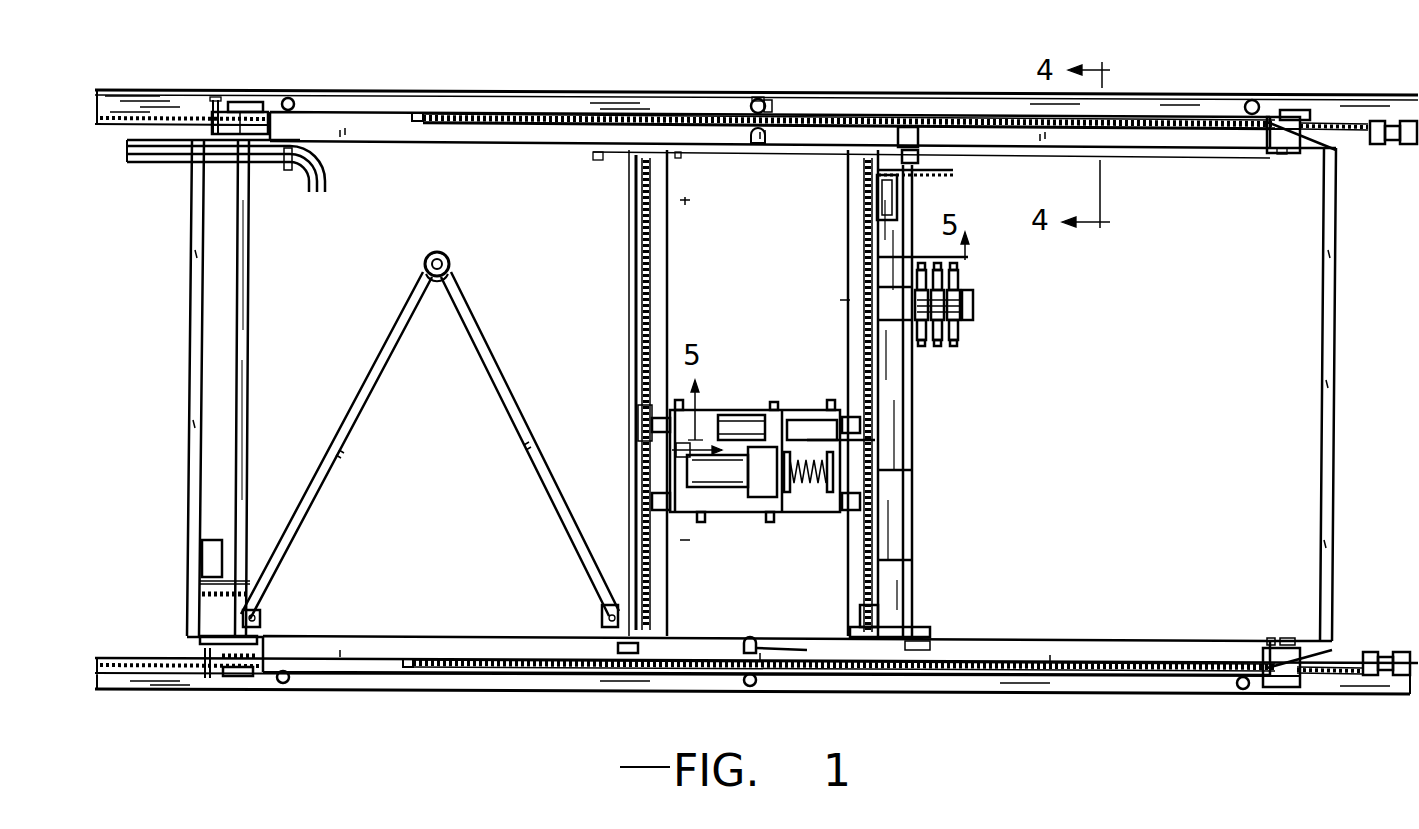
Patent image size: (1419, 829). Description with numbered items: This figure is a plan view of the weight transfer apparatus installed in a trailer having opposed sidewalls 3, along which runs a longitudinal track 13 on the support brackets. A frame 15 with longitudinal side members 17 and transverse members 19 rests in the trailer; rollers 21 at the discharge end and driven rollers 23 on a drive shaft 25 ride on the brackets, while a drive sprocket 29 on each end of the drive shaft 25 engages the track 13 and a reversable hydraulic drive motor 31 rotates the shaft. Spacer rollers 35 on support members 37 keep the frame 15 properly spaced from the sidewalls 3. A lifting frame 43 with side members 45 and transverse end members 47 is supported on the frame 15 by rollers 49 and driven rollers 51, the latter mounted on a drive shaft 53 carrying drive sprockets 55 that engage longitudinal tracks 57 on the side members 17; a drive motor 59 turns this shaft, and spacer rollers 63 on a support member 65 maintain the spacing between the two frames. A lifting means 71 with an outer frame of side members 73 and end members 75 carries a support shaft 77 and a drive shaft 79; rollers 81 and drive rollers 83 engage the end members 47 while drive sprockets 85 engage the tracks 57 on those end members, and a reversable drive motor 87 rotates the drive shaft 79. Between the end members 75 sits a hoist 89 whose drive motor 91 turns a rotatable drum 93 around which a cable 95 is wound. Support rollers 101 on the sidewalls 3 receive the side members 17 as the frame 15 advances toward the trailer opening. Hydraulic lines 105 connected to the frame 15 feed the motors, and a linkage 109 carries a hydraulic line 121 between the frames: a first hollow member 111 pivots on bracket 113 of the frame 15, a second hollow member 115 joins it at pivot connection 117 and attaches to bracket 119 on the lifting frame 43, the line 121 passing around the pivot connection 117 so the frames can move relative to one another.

The sidewalls 3 is at (1197, 92).
The longitudinal track 13 is at (160, 92).
The frame 15 is at (767, 391).
The longitudinal side members 17 is at (347, 123).
The transverse members 19 is at (190, 354).
The rollers 21 is at (1295, 112).
The driven rollers 23 is at (247, 102).
The drive shaft 25 is at (250, 273).
The drive sprocket 29 is at (224, 104).
The reversable hydraulic drive motor 31 is at (200, 559).
The spacer rollers 35 is at (760, 100).
The support members 37 is at (772, 108).
The lifting frame 43 is at (922, 397).
The side members 45 is at (717, 147).
The transverse end members 47 is at (862, 600).
The rollers 49 is at (622, 650).
The driven rollers 51 is at (930, 647).
The drive shaft 53 is at (914, 476).
The drive sprockets 55 is at (905, 125).
The longitudinal tracks 57 is at (517, 117).
The drive motor 59 is at (857, 191).
The spacer rollers 63 is at (747, 647).
The support member 65 is at (760, 647).
The lifting means 71 is at (747, 449).
The side members 73 is at (773, 410).
The end members 75 is at (845, 416).
The support shaft 77 is at (730, 508).
The drive shaft 79 is at (660, 392).
The rollers 81 is at (843, 520).
The drive rollers 83 is at (648, 398).
The drive sprockets 85 is at (650, 413).
The reversable drive motor 87 is at (747, 412).
The hoist 89 is at (647, 443).
The drive motor 91 is at (732, 472).
The rotatable drum 93 is at (802, 512).
The cable 95 is at (860, 472).
The support rollers 101 is at (1385, 653).
The hydraulic lines 105 is at (157, 167).
The linkage 109 is at (430, 403).
The first hollow member 111 is at (340, 473).
The bracket 113 is at (260, 619).
The second hollow member 115 is at (497, 392).
The pivot connection 117 is at (439, 285).
The bracket 119 is at (598, 623).
The hydraulic line 121 is at (437, 252).